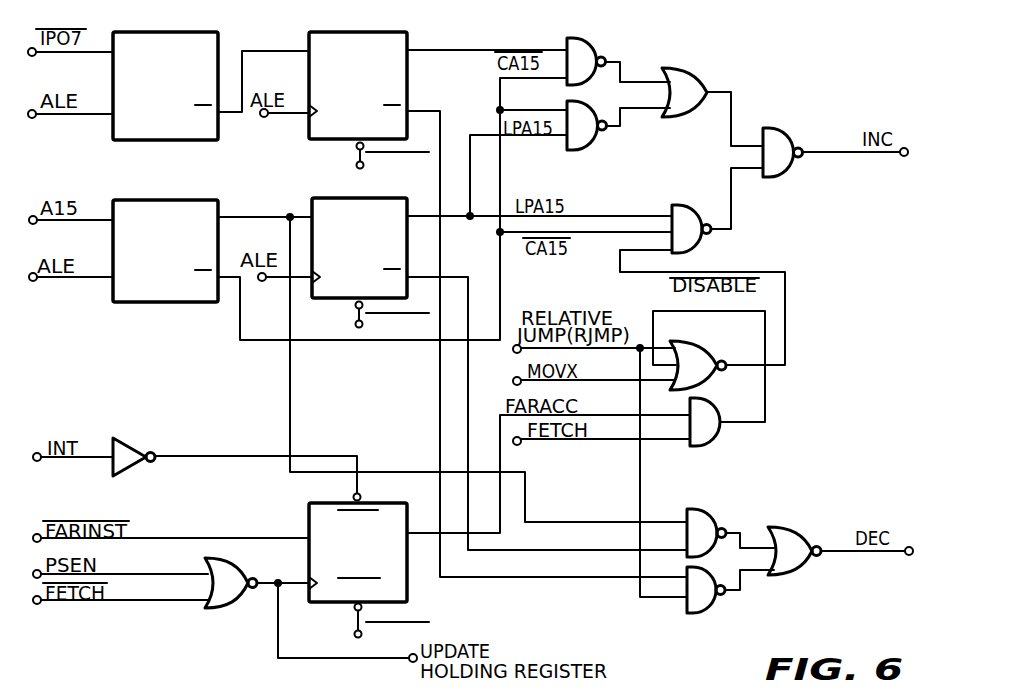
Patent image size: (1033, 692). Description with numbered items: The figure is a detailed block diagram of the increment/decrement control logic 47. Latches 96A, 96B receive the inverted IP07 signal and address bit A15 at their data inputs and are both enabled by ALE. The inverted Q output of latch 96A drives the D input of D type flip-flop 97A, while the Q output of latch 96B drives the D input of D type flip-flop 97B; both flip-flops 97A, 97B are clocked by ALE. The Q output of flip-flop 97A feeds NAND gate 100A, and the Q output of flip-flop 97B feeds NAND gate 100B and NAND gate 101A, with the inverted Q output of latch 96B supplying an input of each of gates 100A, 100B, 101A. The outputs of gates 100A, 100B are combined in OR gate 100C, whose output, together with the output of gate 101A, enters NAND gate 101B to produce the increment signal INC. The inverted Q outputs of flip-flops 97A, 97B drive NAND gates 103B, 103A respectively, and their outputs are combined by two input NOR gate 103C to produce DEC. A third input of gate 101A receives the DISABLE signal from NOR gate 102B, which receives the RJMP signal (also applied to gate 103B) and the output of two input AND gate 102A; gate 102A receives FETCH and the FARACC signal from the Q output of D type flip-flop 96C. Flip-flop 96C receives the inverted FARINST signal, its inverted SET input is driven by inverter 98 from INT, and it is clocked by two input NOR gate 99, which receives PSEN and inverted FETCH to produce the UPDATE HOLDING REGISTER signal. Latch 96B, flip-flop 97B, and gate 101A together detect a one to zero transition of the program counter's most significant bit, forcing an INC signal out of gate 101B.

The latch 96A is at (186, 32).
The latch 96B is at (164, 200).
The D type flip-flop 96C is at (378, 503).
The D type flip-flop 97A is at (368, 32).
The D type flip-flop 97B is at (334, 198).
The inverter 98 is at (148, 454).
The two input NOR gate 99 is at (238, 566).
The NAND gate 100A is at (590, 46).
The NAND gate 100B is at (601, 158).
The OR gate 100C is at (712, 72).
The NAND gate 101A is at (700, 205).
The NAND gate 101B is at (778, 128).
The two input AND gate 102A is at (723, 455).
The NOR gate 102B is at (695, 343).
The NAND gate 103A is at (713, 513).
The NAND gate 103B is at (728, 618).
The two input NOR gate 103C is at (783, 530).
The increment/decrement control logic 47 is at (205, 642).